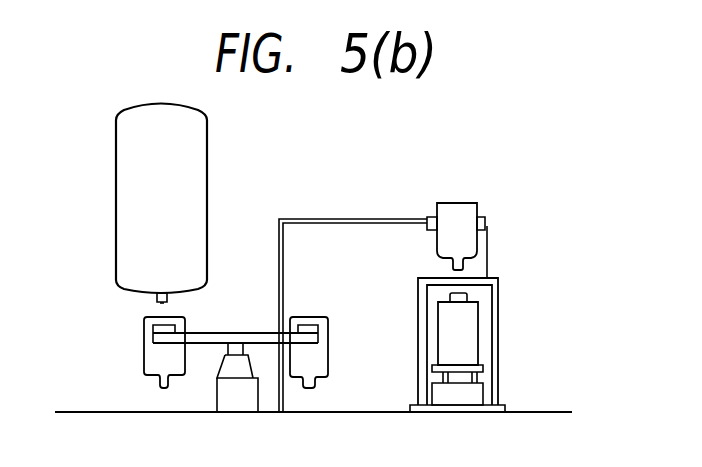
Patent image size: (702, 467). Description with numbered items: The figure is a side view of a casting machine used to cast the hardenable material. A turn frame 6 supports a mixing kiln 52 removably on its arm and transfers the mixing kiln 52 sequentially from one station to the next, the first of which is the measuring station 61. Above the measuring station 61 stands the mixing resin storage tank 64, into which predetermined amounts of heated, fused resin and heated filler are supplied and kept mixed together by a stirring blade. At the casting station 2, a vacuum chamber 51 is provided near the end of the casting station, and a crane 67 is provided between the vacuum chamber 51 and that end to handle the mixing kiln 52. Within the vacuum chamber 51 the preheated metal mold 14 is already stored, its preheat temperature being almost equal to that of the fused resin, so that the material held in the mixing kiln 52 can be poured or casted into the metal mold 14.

The casting station 2 is at (527, 260).
The turn frame 6 is at (240, 333).
The metal mold 14 is at (467, 345).
The vacuum chamber 51 is at (498, 308).
The mixing kiln 52 is at (165, 357).
The measuring station 61 is at (104, 309).
The mixing resin storage tank 64 is at (193, 185).
The crane 67 is at (349, 218).